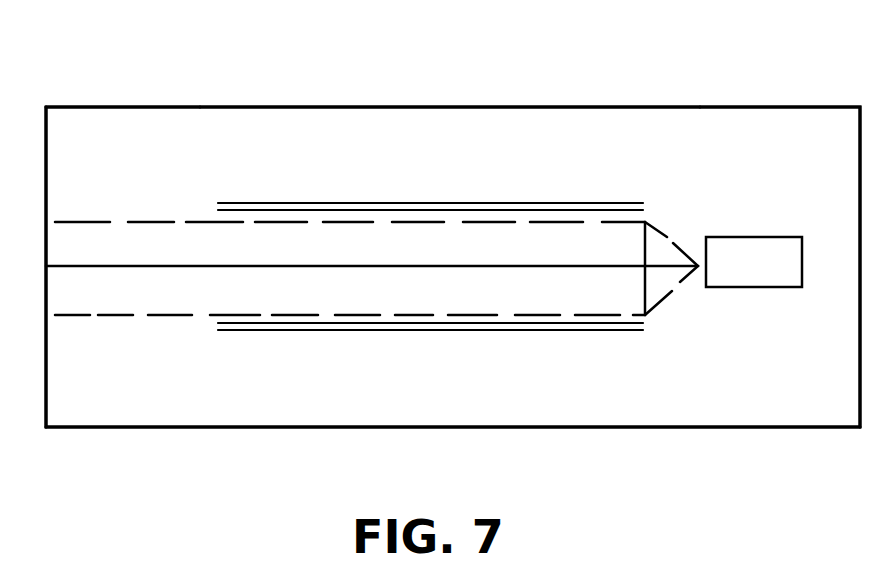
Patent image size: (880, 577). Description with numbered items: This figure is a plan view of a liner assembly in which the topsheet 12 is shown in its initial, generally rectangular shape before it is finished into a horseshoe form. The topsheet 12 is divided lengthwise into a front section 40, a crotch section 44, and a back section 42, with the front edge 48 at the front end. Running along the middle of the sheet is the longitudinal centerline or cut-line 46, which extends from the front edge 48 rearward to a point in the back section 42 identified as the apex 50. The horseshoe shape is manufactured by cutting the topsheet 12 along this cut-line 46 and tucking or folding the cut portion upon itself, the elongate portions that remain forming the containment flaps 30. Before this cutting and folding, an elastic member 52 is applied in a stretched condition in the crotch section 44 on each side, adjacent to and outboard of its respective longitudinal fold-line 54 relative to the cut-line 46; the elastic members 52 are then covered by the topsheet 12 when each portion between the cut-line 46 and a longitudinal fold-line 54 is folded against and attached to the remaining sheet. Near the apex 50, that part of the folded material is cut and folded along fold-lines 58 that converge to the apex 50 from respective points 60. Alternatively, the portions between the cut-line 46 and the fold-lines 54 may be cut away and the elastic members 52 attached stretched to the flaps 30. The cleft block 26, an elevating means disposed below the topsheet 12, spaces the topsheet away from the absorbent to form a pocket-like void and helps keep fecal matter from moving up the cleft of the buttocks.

The topsheet 12 is at (597, 105).
The cleft block 26 is at (755, 277).
The containment flaps 30 is at (347, 170).
The front section 40 is at (88, 125).
The back section 42 is at (805, 122).
The crotch section 44 is at (435, 115).
The longitudinal centerline or cut-line 46 is at (158, 268).
The front edge 48 is at (44, 170).
The apex 50 is at (702, 282).
The elastic member 52 is at (435, 208).
The longitudinal fold-line 54 is at (152, 222).
The fold-lines 58 is at (667, 235).
The points 60 is at (648, 222).